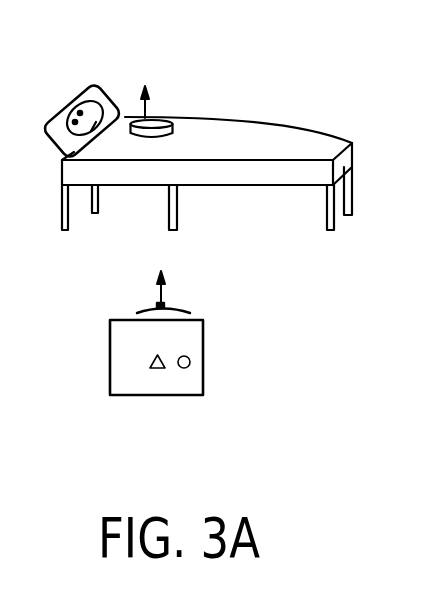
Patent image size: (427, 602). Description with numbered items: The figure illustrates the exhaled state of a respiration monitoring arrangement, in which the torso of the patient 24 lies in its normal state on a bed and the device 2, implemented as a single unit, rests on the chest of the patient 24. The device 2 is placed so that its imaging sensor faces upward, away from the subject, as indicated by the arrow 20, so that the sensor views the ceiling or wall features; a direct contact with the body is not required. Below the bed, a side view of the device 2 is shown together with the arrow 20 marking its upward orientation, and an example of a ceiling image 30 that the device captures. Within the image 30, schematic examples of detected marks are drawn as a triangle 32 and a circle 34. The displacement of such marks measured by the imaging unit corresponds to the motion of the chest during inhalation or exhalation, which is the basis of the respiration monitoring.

The single device 2 is at (166, 116).
The arrow 20 is at (148, 118).
The patient 24 is at (112, 97).
The ceiling image 30 is at (203, 335).
The triangle 32 is at (150, 362).
The circle 34 is at (190, 363).